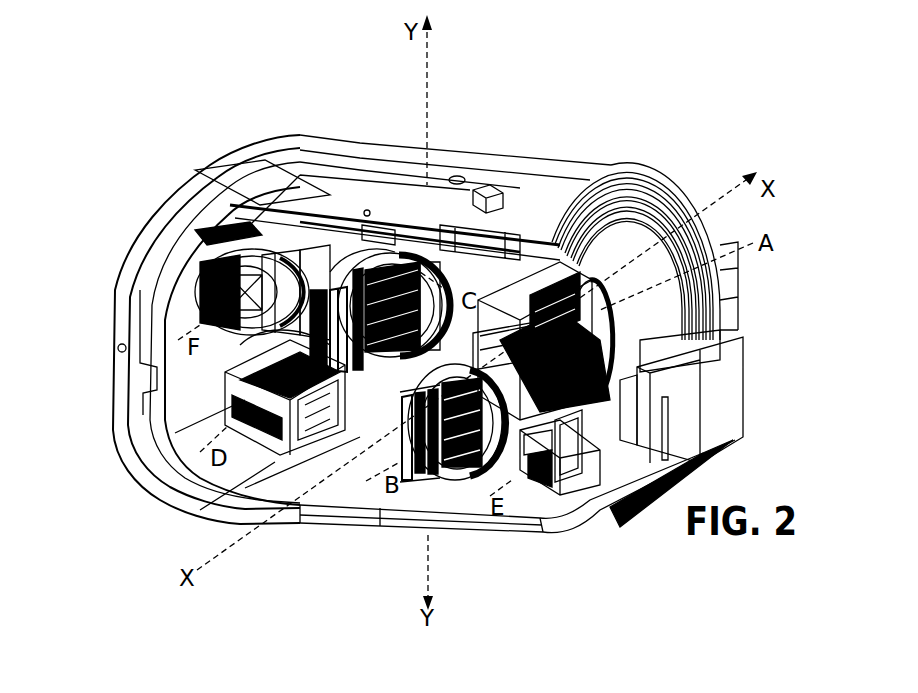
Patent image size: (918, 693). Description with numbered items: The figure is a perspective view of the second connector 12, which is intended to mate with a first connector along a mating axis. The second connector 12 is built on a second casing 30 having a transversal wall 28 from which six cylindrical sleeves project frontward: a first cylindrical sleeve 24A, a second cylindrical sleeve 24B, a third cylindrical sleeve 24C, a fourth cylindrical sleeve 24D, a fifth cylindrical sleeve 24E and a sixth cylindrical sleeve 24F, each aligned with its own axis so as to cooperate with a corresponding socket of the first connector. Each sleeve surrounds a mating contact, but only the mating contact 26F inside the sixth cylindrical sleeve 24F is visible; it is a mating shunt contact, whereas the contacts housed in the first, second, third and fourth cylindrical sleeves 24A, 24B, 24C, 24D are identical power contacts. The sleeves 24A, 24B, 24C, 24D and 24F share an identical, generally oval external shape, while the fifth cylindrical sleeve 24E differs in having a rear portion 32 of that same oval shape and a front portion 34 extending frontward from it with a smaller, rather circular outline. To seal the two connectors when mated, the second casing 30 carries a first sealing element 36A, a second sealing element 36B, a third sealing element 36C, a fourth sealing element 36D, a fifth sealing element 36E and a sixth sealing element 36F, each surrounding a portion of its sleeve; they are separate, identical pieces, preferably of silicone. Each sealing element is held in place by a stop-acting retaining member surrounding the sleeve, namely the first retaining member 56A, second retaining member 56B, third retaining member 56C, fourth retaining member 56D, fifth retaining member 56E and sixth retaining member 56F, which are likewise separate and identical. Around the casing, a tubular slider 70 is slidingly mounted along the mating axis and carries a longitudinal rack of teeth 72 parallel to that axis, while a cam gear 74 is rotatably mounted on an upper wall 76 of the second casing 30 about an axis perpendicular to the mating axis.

The second connector 12 is at (130, 138).
The second casing 30 is at (172, 507).
The slider 70 is at (662, 182).
The transversal wall 28 is at (492, 287).
The longitudinal rack of teeth 72 is at (486, 195).
The cam gear 74 is at (382, 245).
The upper wall 76 is at (240, 240).
The first cylindrical sleeve 24A is at (547, 265).
The first sealing element 36A is at (549, 275).
The first retaining member 56A is at (565, 257).
The second cylindrical sleeve 24B is at (458, 462).
The second sealing element 36B is at (520, 462).
The second retaining member 56B is at (480, 465).
The third cylindrical sleeve 24C is at (362, 262).
The third sealing element 36C is at (437, 267).
The third retaining member 56C is at (378, 240).
The fourth cylindrical sleeve 24D is at (298, 498).
The fourth sealing element 36D is at (383, 470).
The fourth retaining member 56D is at (345, 460).
The fifth cylindrical sleeve 24E is at (660, 572).
The rear portion 32 is at (600, 450).
The front portion 34 is at (573, 478).
The sixth cylindrical sleeve 24F is at (203, 277).
The mating contact 26F is at (200, 275).
The sixth sealing element 36F is at (347, 262).
The sixth retaining member 56F is at (280, 257).
The fifth sealing element 36E is at (693, 327).
The fifth retaining member 56E is at (690, 362).